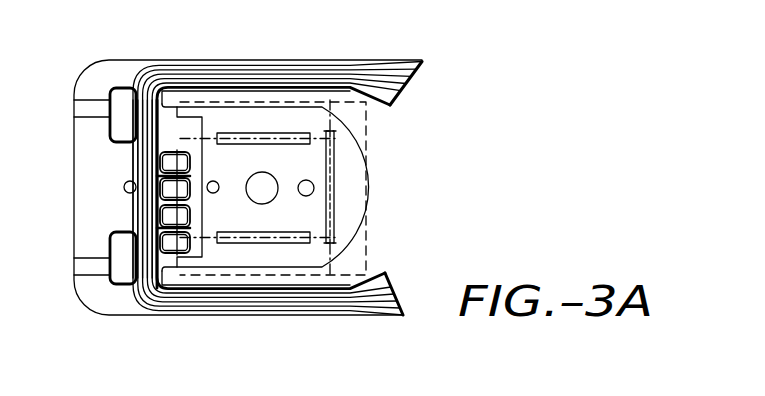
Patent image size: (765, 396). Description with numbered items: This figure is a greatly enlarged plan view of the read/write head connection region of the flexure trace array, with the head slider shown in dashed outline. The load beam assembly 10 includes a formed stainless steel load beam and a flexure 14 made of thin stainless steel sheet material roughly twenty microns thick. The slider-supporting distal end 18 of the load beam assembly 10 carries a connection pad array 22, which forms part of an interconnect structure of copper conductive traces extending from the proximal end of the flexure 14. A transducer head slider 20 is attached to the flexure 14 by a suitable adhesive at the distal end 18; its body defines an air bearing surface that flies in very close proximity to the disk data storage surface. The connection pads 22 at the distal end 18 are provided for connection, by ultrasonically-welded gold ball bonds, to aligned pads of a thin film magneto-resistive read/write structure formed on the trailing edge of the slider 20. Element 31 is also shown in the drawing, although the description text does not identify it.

The load beam assembly 10 is at (311, 340).
The flexure 14 is at (125, 305).
The distal end 18 is at (82, 63).
The transducer head slider 20 is at (366, 129).
The connection pad array 22 is at (174, 162).
The support bar 31 is at (362, 148).